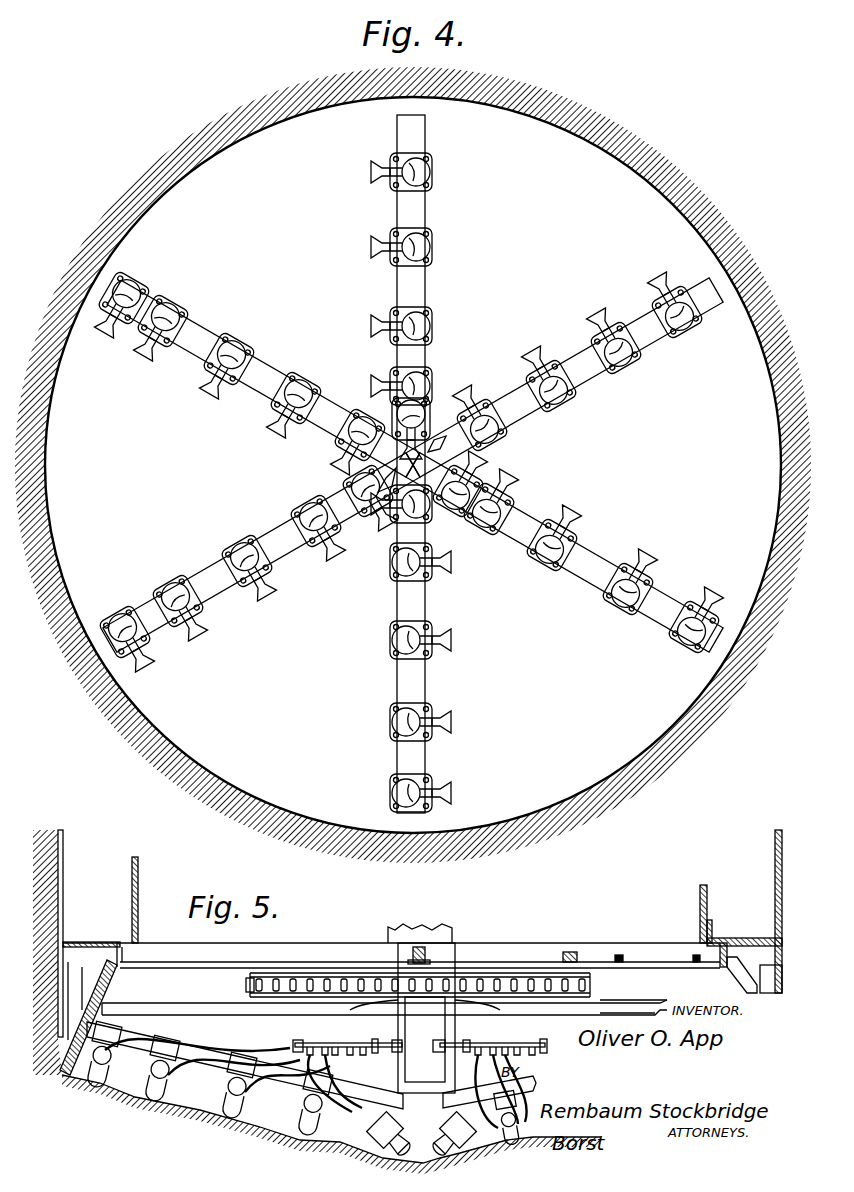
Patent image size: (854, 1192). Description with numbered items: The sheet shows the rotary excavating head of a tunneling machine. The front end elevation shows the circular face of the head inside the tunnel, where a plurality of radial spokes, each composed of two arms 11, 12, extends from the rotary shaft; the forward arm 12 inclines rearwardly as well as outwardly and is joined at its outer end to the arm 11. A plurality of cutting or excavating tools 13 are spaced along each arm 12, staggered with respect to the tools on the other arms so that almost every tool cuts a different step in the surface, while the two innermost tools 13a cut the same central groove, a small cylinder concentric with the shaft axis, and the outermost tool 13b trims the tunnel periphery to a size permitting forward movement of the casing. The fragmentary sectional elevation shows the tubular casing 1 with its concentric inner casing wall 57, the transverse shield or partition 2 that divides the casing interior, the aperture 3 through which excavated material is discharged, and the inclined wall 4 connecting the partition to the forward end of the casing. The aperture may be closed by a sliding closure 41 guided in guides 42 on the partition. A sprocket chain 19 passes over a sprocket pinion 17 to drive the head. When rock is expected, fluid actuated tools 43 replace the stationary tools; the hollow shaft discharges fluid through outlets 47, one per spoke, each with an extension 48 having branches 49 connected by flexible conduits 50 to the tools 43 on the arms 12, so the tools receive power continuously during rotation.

In FIG. 5, the tubular casing 1 is at (63, 897).
In FIG. 5, the shield or partition 2 is at (503, 962).
In FIG. 5, the aperture 3 is at (645, 969).
In FIG. 5, the inclined wall 4 is at (112, 986).
In FIG. 5, the arm 11 is at (222, 1012).
In FIG. 4, the forward arm 12 is at (273, 528).
In FIG. 5, the forward arm 12 is at (140, 1037).
In FIG. 4, the cutting or excavating tools 13 is at (378, 240).
In FIG. 4, the innermost tools 13a is at (386, 401).
In FIG. 4, the outermost tool 13b is at (130, 289).
In FIG. 5, the sprocket pinion 17 is at (250, 972).
In FIG. 5, the sprocket chain 19 is at (343, 973).
In FIG. 5, the closure 41 is at (642, 957).
In FIG. 5, the guides 42 is at (613, 960).
In FIG. 5, the fluid actuated tools 43 is at (80, 1063).
In FIG. 5, the outlets 47 is at (397, 1044).
In FIG. 5, the extension 48 is at (372, 1045).
In FIG. 5, the branches 49 is at (298, 1043).
In FIG. 5, the flexible conduits 50 is at (213, 1043).
In FIG. 5, the inner casing wall 57 is at (700, 903).